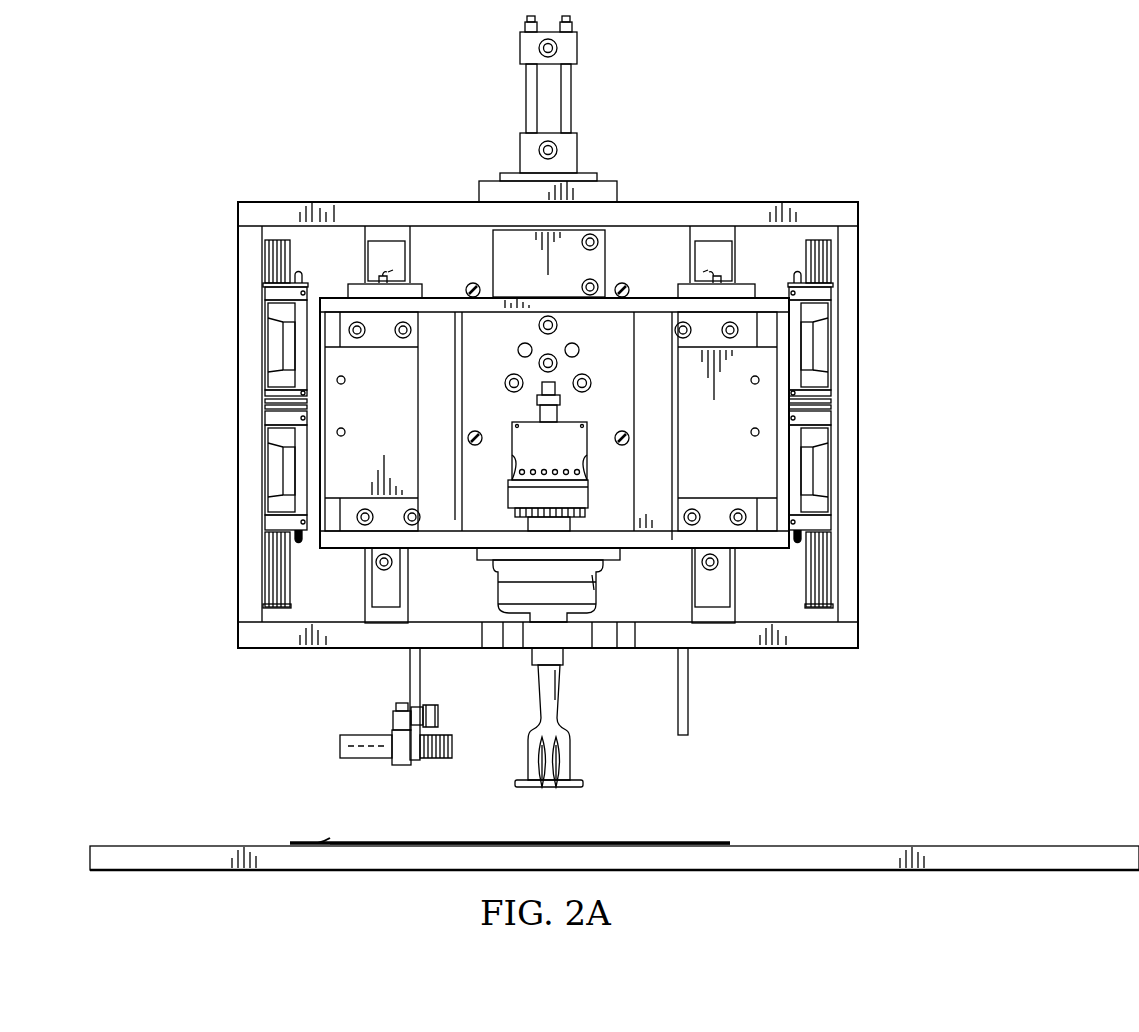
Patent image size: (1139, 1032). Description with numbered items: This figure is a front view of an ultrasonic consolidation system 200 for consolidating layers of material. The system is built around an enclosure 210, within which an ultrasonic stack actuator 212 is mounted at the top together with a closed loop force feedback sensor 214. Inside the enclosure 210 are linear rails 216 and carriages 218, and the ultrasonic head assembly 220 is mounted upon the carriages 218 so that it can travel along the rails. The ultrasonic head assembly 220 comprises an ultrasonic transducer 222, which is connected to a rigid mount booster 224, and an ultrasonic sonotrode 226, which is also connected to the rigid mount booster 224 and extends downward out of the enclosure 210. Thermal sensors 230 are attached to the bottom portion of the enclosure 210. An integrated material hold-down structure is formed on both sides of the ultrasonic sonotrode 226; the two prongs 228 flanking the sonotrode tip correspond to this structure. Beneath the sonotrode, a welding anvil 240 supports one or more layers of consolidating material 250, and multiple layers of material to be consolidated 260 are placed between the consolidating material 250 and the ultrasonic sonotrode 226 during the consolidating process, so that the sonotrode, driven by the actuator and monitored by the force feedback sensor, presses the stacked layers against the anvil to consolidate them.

The ultrasonic consolidation system 200 is at (132, 226).
The enclosure 210 is at (236, 408).
The ultrasonic stack actuator 212 is at (524, 97).
The closed loop force feedback sensor 214 is at (493, 262).
The linear rails 216 is at (266, 541).
The carriages 218 is at (266, 463).
The ultrasonic head assembly 220 is at (644, 299).
The ultrasonic transducer 222 is at (524, 420).
The rigid mount booster 224 is at (598, 588).
The ultrasonic sonotrode 226 is at (558, 688).
The gripper prongs 228 is at (526, 788).
The thermal sensors 230 is at (366, 735).
The welding anvil 240 is at (190, 870).
The consolidating material 250 is at (310, 842).
The material to be consolidated 260 is at (440, 842).